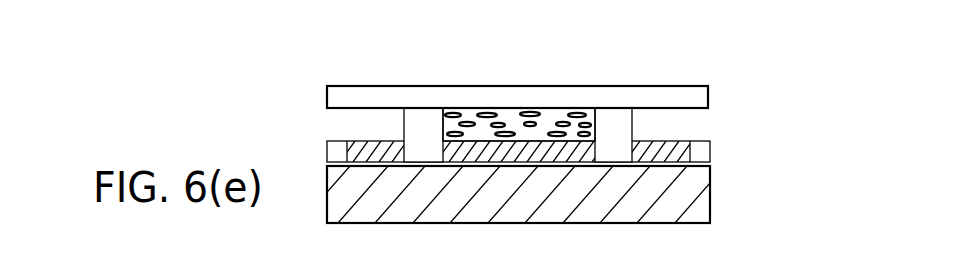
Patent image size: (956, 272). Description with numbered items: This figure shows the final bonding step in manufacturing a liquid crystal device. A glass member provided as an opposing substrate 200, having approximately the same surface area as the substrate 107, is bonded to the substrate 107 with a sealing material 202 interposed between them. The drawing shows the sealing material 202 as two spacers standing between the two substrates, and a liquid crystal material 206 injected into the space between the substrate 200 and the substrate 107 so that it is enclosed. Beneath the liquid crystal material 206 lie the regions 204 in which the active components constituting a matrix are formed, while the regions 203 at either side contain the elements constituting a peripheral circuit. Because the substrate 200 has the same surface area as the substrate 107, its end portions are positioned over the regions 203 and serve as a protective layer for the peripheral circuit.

The substrate 107 is at (700, 210).
The opposing substrate 200 is at (708, 98).
The sealing material 202 is at (427, 118).
The regions 203 is at (367, 140).
The regions 204 is at (545, 137).
The liquid crystal material 206 is at (480, 120).